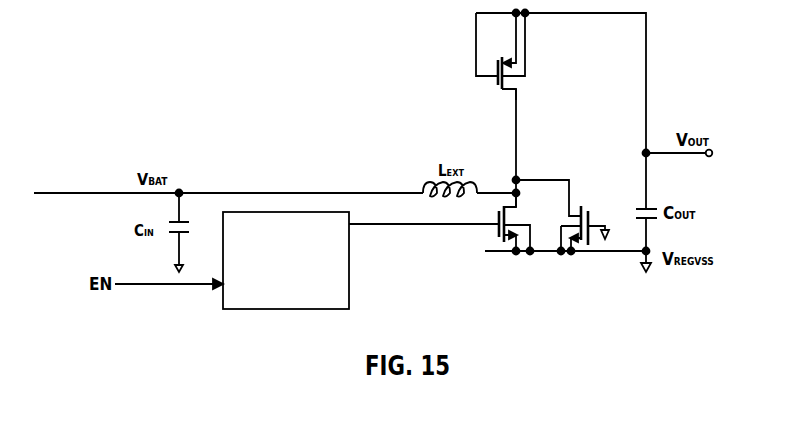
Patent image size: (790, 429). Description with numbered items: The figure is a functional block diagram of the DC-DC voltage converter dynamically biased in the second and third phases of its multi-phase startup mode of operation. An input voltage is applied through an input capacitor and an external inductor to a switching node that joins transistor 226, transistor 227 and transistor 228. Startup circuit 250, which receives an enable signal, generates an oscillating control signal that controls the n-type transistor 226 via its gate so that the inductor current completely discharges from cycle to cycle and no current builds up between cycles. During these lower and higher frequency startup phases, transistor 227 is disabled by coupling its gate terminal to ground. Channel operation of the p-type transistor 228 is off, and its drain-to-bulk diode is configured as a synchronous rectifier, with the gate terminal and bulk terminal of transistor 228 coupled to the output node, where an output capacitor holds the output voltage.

The transistor 226 is at (498, 234).
The transistor 227 is at (586, 245).
The transistor 228 is at (504, 92).
The startup circuit 250 is at (270, 289).